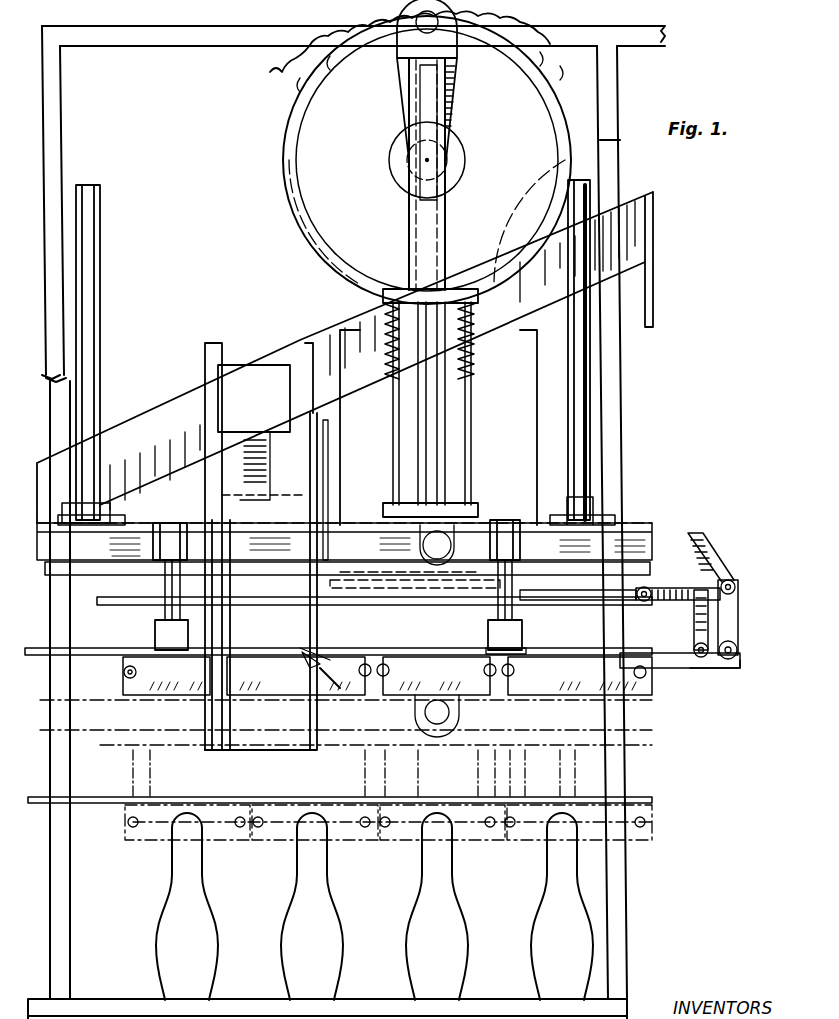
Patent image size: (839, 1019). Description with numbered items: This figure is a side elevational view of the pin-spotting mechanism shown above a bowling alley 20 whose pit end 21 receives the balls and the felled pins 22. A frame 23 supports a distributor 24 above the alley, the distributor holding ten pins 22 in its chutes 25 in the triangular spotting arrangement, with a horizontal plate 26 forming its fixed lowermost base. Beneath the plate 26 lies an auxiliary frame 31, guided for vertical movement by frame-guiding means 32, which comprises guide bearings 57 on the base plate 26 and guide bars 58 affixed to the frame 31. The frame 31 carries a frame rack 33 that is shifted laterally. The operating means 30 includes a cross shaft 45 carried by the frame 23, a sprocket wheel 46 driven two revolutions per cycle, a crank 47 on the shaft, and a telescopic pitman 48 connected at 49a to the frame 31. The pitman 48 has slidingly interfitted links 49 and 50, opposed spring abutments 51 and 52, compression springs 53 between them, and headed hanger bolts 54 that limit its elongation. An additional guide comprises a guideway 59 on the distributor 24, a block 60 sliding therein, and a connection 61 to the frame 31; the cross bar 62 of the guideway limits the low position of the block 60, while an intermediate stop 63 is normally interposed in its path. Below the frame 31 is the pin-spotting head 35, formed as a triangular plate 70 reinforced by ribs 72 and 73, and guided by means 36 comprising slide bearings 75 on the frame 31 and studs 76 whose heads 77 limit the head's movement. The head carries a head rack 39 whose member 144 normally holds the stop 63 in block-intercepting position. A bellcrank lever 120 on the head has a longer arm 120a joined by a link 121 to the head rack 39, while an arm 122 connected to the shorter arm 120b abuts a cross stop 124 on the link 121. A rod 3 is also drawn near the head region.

The bowling alley 20 is at (260, 998).
The pit end 21 is at (627, 1000).
The pins 22 is at (418, 922).
The frame 23 is at (88, 55).
The distributor 24 is at (332, 345).
The chutes 25 is at (341, 436).
The horizontal plate 26 is at (346, 534).
The rod 3 is at (325, 512).
The operating means 30 is at (274, 161).
The auxiliary frame 31 is at (659, 528).
The frame-guiding means 32 is at (599, 388).
The frame rack 33 is at (128, 583).
The pin-spotting head 35 is at (112, 643).
The head-guiding means 36 is at (517, 512).
The head rack 39 is at (582, 606).
The cross shaft 45 is at (410, 154).
The sprocket wheel 46 is at (300, 74).
The crank 47 is at (456, 97).
The pitman 48 is at (458, 240).
The link 49 is at (412, 252).
The connection 49a is at (423, 546).
The link 50 is at (440, 470).
The spring abutment 51 is at (480, 352).
The spring abutment 52 is at (394, 504).
The compression springs 53 is at (476, 376).
The headed hanger bolts 54 is at (392, 412).
The guide bearings 57 is at (96, 512).
The guide bars 58 is at (100, 357).
The guideway 59 is at (210, 500).
The block 60 is at (238, 374).
The connection 61 is at (262, 458).
The cross bar 62 is at (292, 752).
The intermediate stop 63 is at (340, 690).
The plate 70 is at (122, 668).
The ribs 72 is at (118, 690).
The ribs 73 is at (528, 695).
The slide bearings 75 is at (184, 562).
The studs 76 is at (160, 590).
The heads 77 is at (172, 524).
The bellcrank lever 120 is at (740, 650).
The longer arm 120a is at (738, 598).
The shorter arm 120b is at (724, 668).
The link 121 is at (664, 602).
The arm 122 is at (704, 542).
The cross stop 124 is at (730, 580).
The member 144 is at (326, 574).